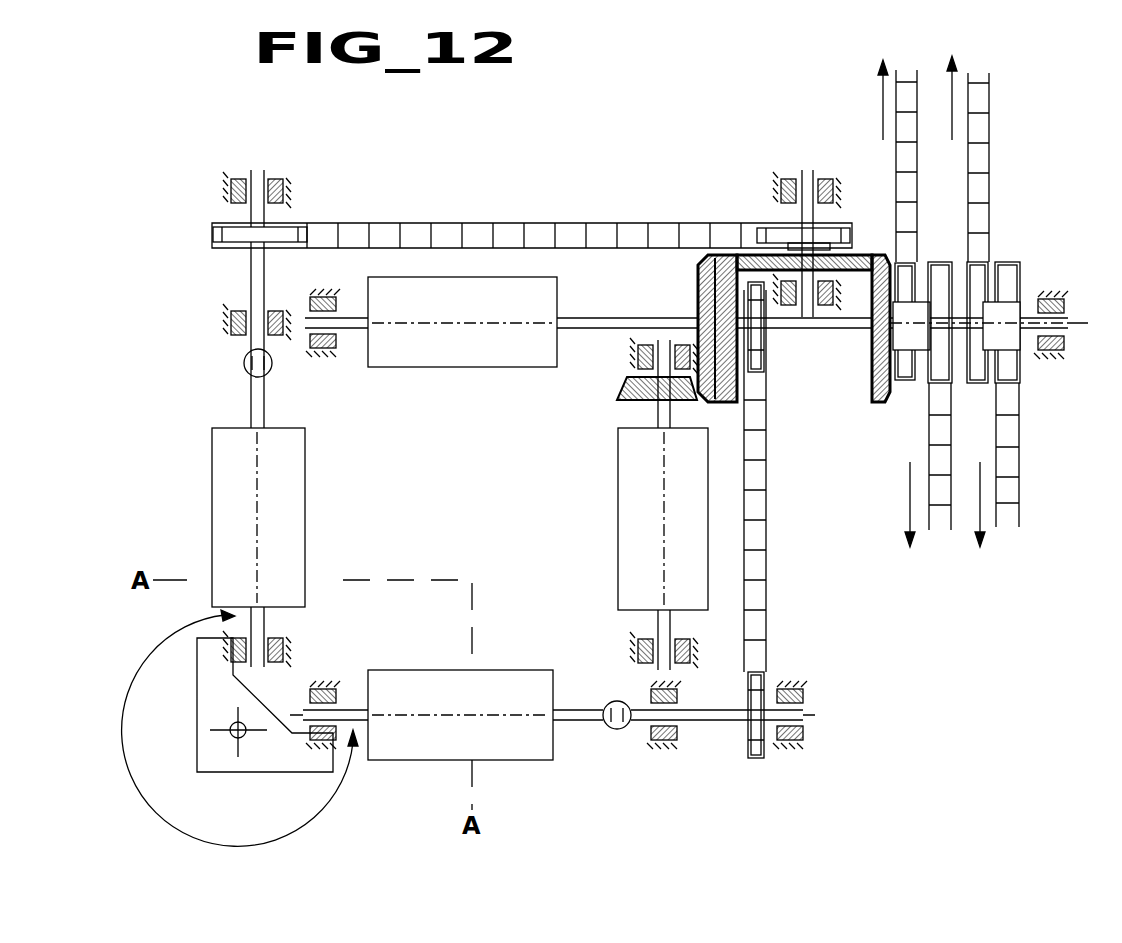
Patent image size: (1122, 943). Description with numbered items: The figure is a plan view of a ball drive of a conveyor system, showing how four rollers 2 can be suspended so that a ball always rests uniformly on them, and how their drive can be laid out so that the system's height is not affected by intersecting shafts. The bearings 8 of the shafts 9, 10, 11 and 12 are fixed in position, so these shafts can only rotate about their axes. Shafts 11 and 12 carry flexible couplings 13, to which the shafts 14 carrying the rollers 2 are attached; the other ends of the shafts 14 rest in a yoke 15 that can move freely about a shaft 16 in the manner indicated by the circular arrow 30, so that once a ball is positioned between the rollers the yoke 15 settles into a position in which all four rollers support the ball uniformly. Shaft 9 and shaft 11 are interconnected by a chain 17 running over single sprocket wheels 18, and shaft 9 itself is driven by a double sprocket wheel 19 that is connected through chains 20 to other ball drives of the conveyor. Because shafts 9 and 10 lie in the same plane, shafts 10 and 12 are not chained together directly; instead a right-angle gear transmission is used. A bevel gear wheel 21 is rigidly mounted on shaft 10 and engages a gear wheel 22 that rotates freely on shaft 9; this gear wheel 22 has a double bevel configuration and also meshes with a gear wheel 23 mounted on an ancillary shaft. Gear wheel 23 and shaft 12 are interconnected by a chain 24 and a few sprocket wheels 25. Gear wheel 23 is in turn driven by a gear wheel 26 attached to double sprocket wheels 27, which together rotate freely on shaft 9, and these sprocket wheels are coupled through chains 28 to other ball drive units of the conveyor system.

The rollers 2 is at (412, 365).
The bearings 8 is at (231, 193).
The shaft 9 is at (355, 330).
The shaft 10 is at (656, 408).
The shaft 11 is at (715, 722).
The shaft 12 is at (250, 276).
The flexible couplings 13 is at (243, 365).
The shafts 14 is at (267, 628).
The yoke 15 is at (262, 768).
The shaft 16 is at (230, 728).
The chain 17 is at (762, 597).
The single sprocket wheels 18 is at (757, 369).
The double sprocket wheel 19 is at (1007, 263).
The chains 20 is at (987, 112).
The bevel gear wheel 21 is at (625, 388).
The gear wheel 22 is at (698, 285).
The gear wheel 23 is at (867, 257).
The chain 24 is at (514, 229).
The sprocket wheels 25 is at (294, 226).
The gear wheel 26 is at (872, 382).
The double sprocket wheels 27 is at (920, 353).
The chains 28 is at (903, 158).
The circular arrow 30 is at (125, 752).